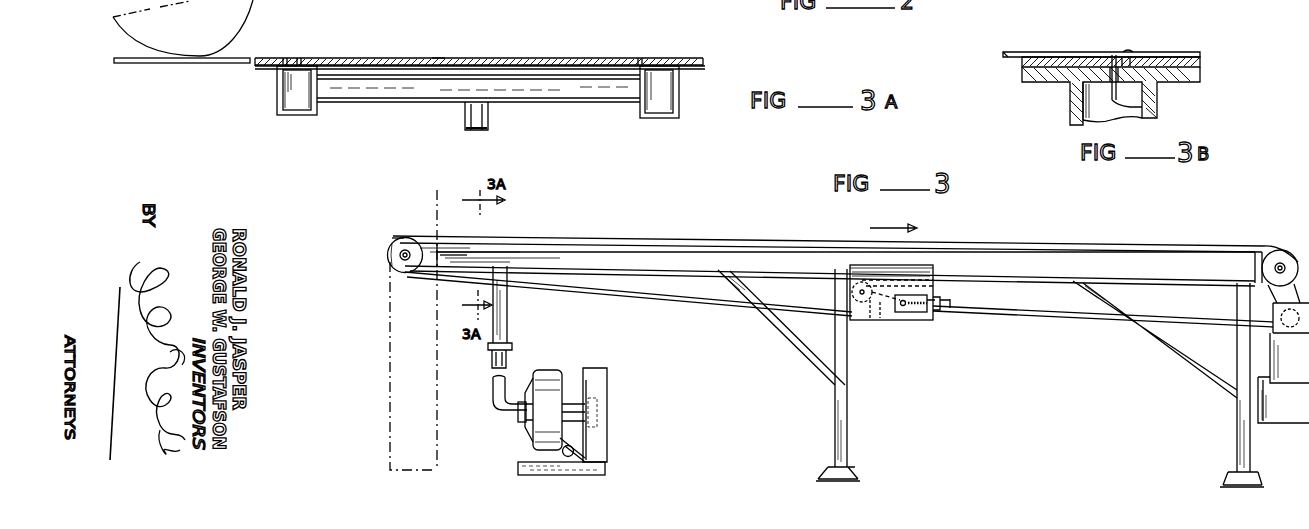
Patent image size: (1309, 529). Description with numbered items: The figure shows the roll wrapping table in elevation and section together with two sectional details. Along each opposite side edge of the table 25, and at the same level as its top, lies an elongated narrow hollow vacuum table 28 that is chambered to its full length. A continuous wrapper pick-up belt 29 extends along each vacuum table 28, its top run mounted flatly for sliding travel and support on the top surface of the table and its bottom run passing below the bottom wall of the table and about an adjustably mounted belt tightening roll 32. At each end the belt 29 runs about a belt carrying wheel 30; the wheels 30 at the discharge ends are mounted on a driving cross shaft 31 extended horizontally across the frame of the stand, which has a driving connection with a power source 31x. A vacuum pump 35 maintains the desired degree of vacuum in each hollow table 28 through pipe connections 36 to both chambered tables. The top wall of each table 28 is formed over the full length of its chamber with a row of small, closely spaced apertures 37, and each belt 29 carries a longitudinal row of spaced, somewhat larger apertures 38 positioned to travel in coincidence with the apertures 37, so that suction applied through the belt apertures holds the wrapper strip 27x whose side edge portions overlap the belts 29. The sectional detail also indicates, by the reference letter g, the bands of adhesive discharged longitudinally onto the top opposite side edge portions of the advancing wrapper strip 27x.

In FIG. 3A, the table 25 is at (532, 58).
In FIG. 3A, the wrapper strip 27x is at (438, 58).
In FIG. 3B, the wrapper strip 27x is at (1035, 52).
In FIG. 3A, the vacuum table 28 is at (277, 96).
In FIG. 3B, the vacuum table 28 is at (1157, 100).
In FIG. 3, the vacuum table 28 is at (665, 272).
In FIG. 3A, the wrapper pick-up belt 29 is at (268, 58).
In FIG. 3B, the wrapper pick-up belt 29 is at (1200, 62).
In FIG. 3, the wrapper pick-up belt 29 is at (739, 239).
In FIG. 3, the belt carrying wheel 30 is at (397, 252).
In FIG. 3, the driving cross shaft 31 is at (1280, 262).
In FIG. 3, the power source 31x is at (1275, 326).
In FIG. 3, the belt tightening roll 32 is at (873, 313).
In FIG. 3, the vacuum pump 35 is at (548, 371).
In FIG. 3A, the pipe connection 36 is at (490, 116).
In FIG. 3, the pipe connection 36 is at (508, 325).
In FIG. 3A, the aperture 37 is at (290, 74).
In FIG. 3B, the aperture 37 is at (1142, 106).
In FIG. 3A, the aperture 38 is at (300, 58).
In FIG. 3B, the aperture 38 is at (1112, 57).
In FIG. 3A, the adhesive strip g is at (284, 58).
In FIG. 3B, the adhesive strip g is at (1130, 52).